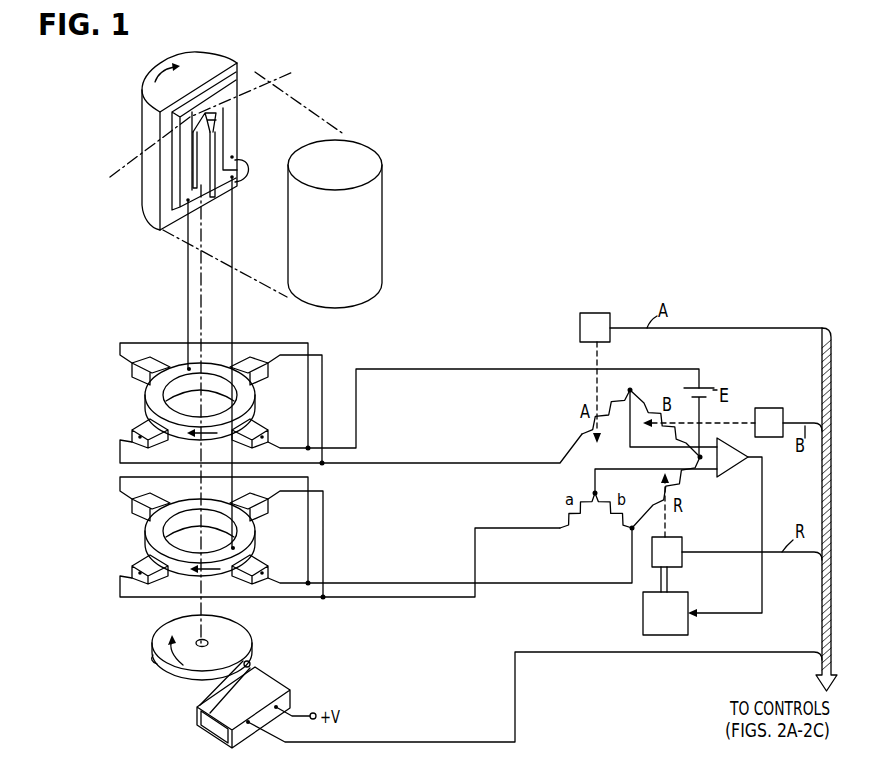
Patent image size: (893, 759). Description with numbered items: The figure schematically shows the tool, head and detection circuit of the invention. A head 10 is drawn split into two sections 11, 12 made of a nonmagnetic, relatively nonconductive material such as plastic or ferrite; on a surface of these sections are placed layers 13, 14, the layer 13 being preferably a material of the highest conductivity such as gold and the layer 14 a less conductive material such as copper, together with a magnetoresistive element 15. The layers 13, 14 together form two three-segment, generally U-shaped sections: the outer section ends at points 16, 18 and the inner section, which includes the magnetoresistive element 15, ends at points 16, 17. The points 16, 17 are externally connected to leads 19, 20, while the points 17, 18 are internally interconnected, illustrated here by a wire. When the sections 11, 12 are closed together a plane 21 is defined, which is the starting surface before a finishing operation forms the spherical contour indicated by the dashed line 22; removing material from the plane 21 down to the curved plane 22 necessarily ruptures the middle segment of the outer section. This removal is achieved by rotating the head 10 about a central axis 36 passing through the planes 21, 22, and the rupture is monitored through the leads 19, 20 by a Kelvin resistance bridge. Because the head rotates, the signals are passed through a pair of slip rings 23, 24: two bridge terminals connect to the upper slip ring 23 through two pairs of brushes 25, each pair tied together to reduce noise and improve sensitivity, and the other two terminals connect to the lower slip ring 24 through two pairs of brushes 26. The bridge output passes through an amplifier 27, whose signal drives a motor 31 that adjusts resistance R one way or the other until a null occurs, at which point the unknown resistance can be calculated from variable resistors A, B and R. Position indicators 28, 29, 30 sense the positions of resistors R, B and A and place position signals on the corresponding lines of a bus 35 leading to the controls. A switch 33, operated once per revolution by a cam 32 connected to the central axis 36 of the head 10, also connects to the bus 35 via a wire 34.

The head 10 is at (136, 102).
The section 11 is at (143, 127).
The section 12 is at (372, 194).
The layer 13 is at (233, 108).
The layer 14 is at (228, 80).
The magnetoresistive element 15 is at (214, 124).
The point 16 is at (188, 200).
The point 17 is at (234, 176).
The point 18 is at (234, 155).
The lead 19 is at (188, 310).
The lead 20 is at (233, 312).
The plane 21 is at (206, 66).
The curved plane 22 is at (112, 176).
The slip ring 23 is at (153, 400).
The slip ring 24 is at (153, 534).
The brushes 25 is at (137, 376).
The brushes 26 is at (138, 513).
The amplifier 27 is at (727, 472).
The position indicator 28 is at (682, 541).
The position indicator 29 is at (767, 408).
The position indicator 30 is at (592, 313).
The motor 31 is at (643, 623).
The cam 32 is at (157, 644).
The switch 33 is at (270, 684).
The wire 34 is at (385, 741).
The bus 35 is at (831, 623).
The central axis 36 is at (200, 270).